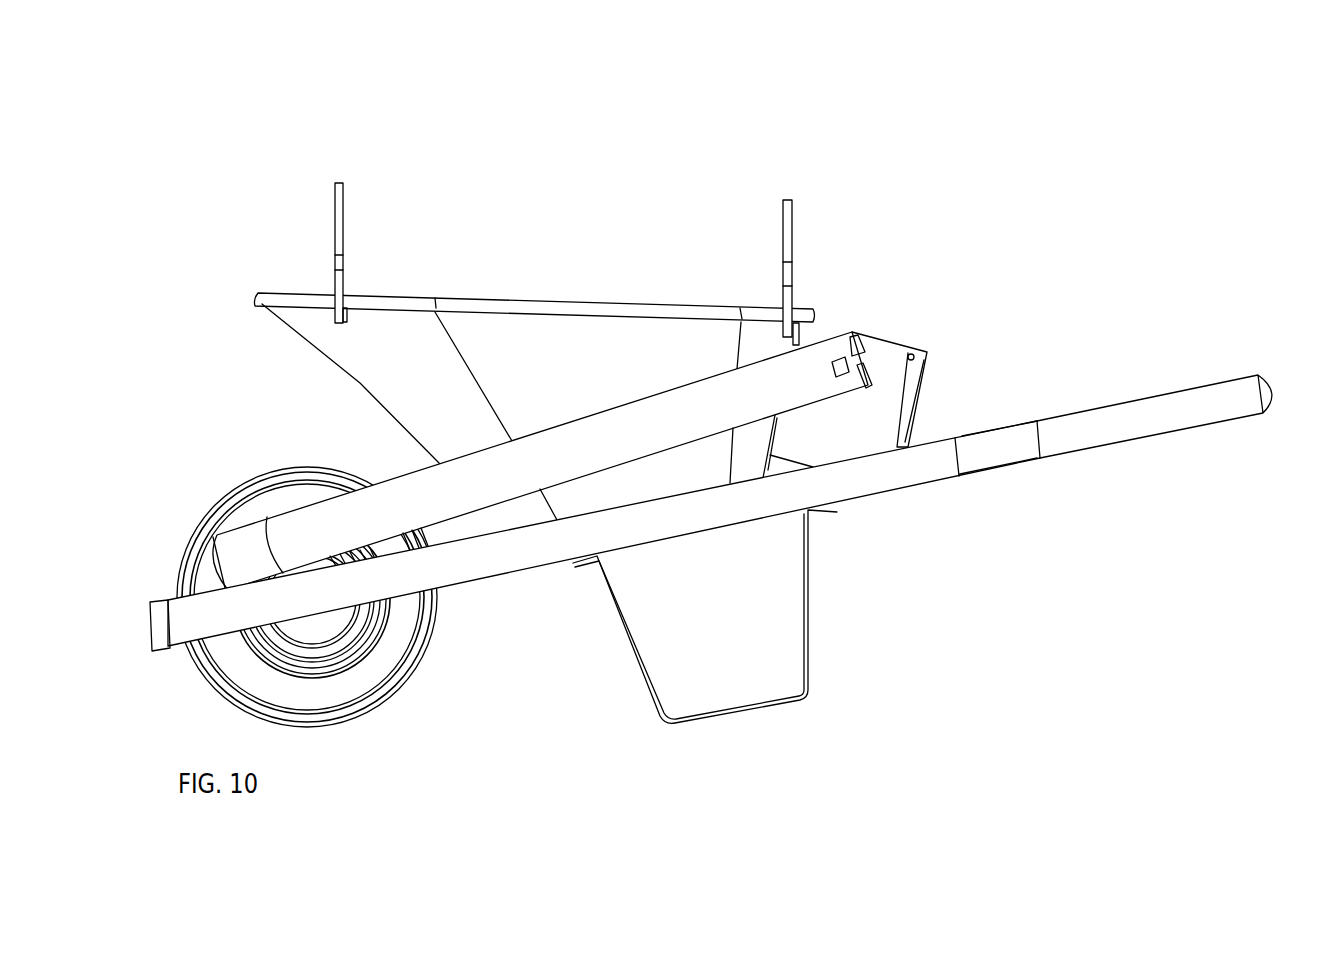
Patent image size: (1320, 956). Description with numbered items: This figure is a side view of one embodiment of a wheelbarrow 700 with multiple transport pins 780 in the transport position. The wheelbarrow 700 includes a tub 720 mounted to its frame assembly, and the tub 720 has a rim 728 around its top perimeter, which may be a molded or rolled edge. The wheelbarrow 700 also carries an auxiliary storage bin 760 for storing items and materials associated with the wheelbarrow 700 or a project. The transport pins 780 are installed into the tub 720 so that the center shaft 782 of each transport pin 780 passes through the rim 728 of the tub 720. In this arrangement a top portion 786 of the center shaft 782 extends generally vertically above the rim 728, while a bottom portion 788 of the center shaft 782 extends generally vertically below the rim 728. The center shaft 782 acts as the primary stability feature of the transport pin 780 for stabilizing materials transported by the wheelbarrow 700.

The wheelbarrow 700 is at (711, 396).
The tub 720 is at (572, 304).
The rim 728 is at (535, 300).
The storage bin 760 is at (972, 367).
The transport pin 780 is at (371, 219).
The center shaft 782 is at (340, 268).
The top portion 786 is at (320, 251).
The bottom portion 788 is at (318, 323).